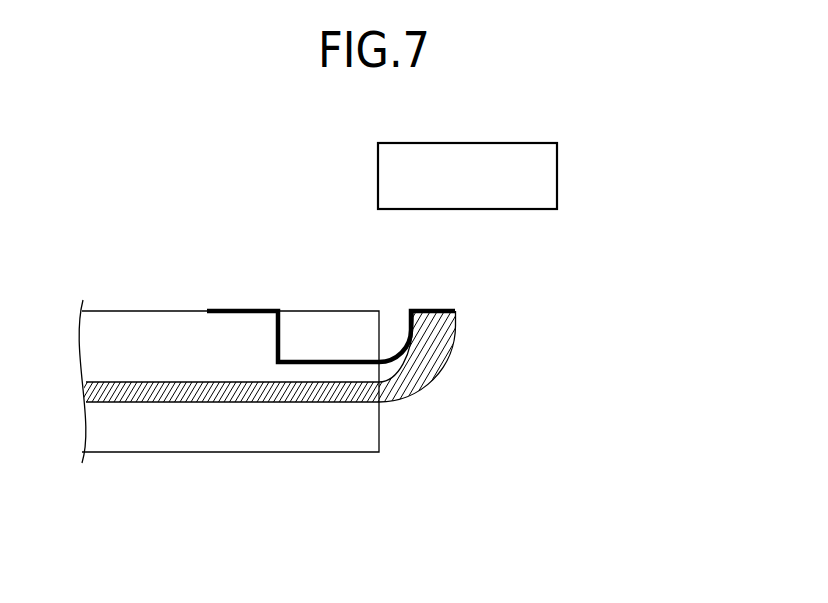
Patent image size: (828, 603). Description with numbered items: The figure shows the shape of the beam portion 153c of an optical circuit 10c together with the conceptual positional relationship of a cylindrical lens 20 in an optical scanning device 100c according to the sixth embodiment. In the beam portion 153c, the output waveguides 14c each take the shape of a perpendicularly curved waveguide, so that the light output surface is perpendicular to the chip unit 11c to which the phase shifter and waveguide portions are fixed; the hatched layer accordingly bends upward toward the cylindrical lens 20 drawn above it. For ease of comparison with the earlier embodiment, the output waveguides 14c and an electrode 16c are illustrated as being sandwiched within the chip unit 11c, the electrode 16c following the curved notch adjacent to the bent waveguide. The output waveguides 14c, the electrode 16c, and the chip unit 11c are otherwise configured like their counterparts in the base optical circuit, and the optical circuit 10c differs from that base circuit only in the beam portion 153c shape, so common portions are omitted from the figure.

The cylindrical lens 20 is at (487, 143).
The optical scanning device 100c is at (381, 343).
The optical circuit 10c is at (342, 381).
The chip unit 11c is at (126, 311).
The output waveguides 14c is at (442, 363).
The electrode 16c is at (392, 311).
The beam portion 153c is at (455, 466).